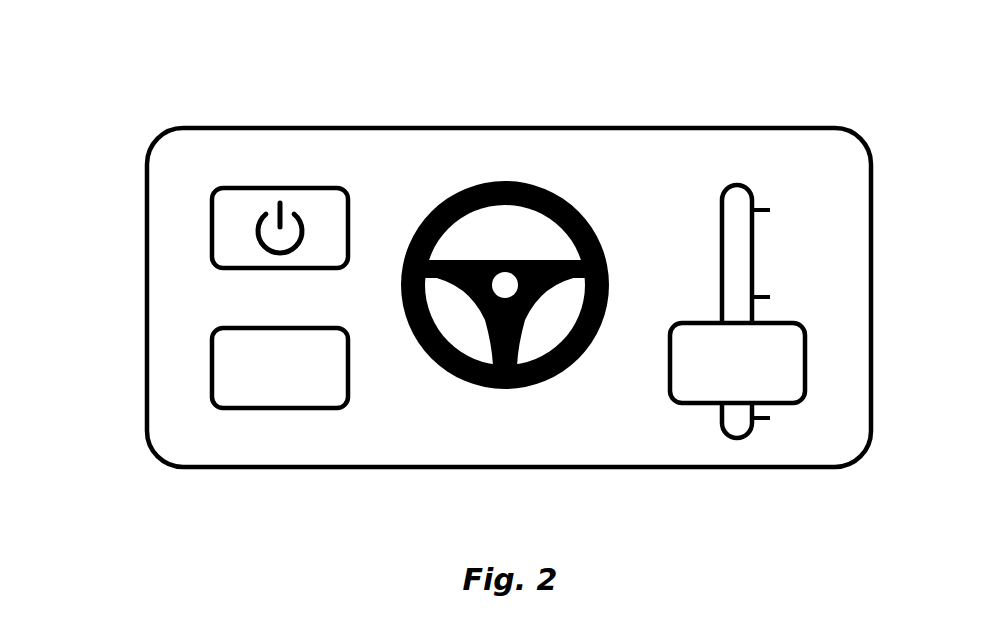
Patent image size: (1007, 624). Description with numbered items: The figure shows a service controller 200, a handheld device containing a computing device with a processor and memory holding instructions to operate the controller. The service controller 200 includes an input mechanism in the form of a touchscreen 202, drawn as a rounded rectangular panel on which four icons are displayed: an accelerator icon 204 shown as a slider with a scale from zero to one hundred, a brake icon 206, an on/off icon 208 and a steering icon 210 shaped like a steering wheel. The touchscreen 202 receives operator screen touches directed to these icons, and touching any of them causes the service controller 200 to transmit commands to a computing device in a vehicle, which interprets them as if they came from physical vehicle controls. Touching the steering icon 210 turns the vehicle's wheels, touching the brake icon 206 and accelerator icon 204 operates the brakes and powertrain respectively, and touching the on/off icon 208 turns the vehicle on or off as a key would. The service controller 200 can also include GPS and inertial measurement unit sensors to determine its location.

The service controller 200 is at (488, 27).
The touchscreen 202 is at (280, 468).
The accelerator icon 204 is at (806, 373).
The brake icon 206 is at (212, 362).
The on/off icon 208 is at (212, 238).
The steering icon 210 is at (447, 207).